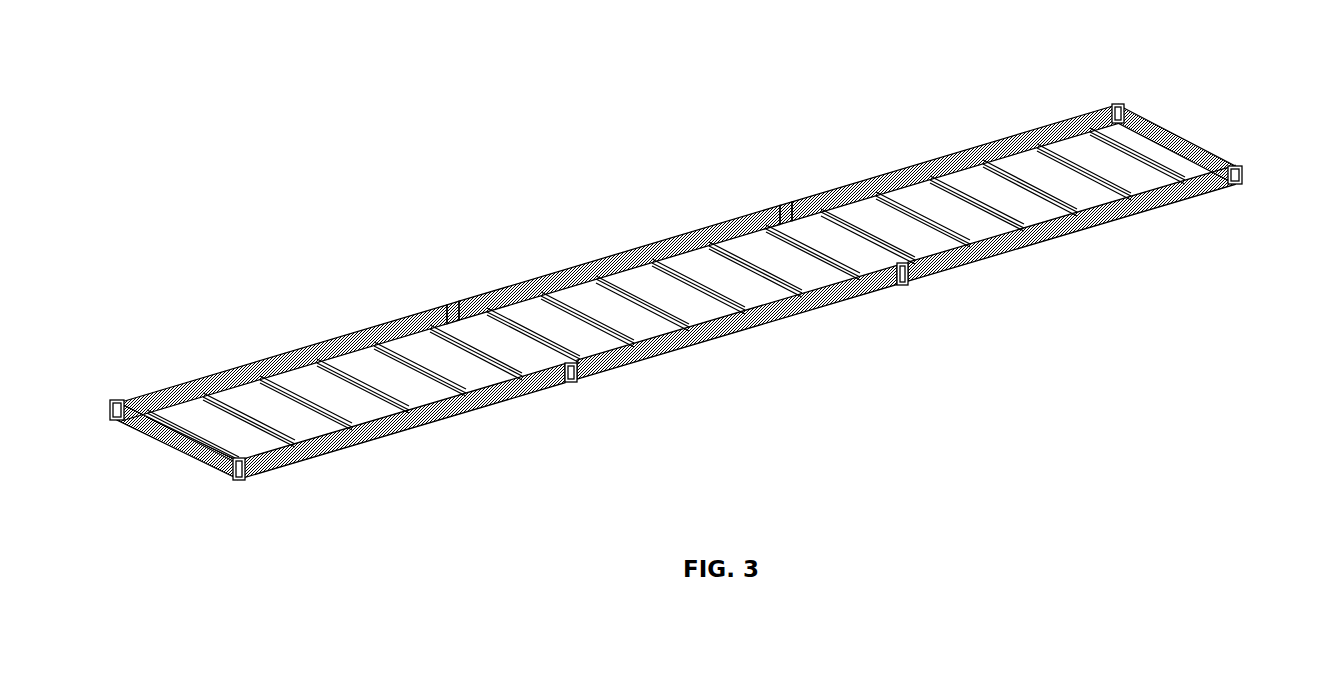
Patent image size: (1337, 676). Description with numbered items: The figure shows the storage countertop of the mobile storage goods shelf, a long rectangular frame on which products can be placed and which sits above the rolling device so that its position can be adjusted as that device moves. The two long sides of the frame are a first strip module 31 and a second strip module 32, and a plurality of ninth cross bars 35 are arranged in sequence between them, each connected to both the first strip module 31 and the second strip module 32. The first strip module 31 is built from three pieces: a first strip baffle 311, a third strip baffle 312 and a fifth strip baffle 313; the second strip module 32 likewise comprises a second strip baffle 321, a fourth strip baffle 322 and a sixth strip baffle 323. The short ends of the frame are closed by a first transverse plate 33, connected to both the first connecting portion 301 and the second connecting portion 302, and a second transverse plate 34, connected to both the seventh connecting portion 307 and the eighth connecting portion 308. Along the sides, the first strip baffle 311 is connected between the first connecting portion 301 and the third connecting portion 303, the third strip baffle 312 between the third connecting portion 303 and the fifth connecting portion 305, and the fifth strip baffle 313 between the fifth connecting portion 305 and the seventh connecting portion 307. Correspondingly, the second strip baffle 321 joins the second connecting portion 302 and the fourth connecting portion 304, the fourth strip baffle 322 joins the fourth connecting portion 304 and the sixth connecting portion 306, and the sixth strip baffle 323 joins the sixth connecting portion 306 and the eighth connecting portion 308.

The first strip module 31 is at (736, 322).
The first strip baffle 311 is at (388, 434).
The third strip baffle 312 is at (708, 342).
The fifth strip baffle 313 is at (1037, 245).
The second strip module 32 is at (620, 251).
The second strip baffle 321 is at (249, 366).
The fourth strip baffle 322 is at (558, 272).
The sixth strip baffle 323 is at (930, 163).
The first transverse plate 33 is at (168, 443).
The second transverse plate 34 is at (1250, 127).
The ninth cross bars 35 is at (1127, 145).
The first connecting portion 301 is at (250, 473).
The second connecting portion 302 is at (117, 402).
The third connecting portion 303 is at (578, 378).
The fourth connecting portion 304 is at (449, 303).
The fifth connecting portion 305 is at (964, 287).
The sixth connecting portion 306 is at (782, 207).
The seventh connecting portion 307 is at (1331, 190).
The eighth connecting portion 308 is at (1118, 104).